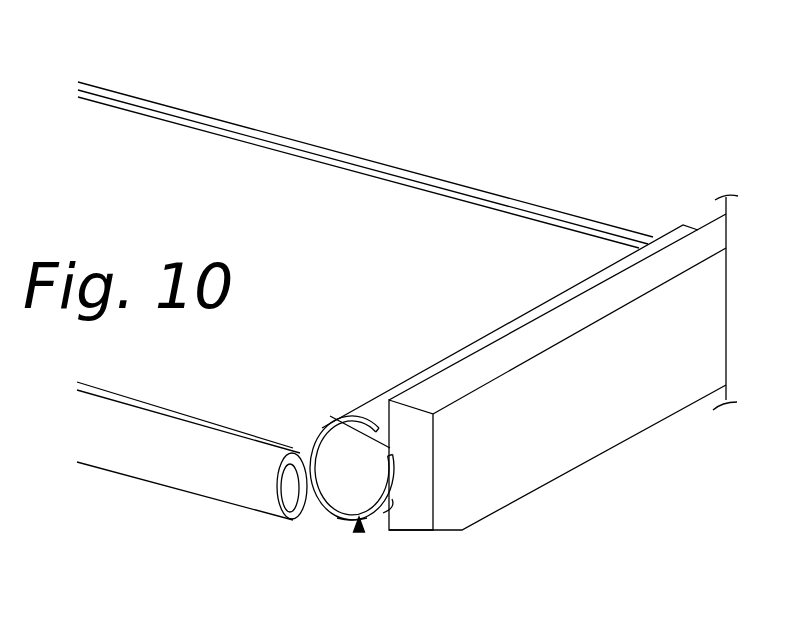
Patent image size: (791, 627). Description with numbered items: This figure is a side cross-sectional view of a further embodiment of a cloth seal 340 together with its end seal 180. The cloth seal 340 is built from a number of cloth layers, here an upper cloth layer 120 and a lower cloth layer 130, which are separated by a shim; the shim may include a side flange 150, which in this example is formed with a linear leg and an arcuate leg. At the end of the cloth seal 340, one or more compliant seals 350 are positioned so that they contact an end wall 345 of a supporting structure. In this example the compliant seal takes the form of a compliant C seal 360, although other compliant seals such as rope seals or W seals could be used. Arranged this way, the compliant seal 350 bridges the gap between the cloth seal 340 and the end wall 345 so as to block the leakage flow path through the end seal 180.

The cloth seal 340 is at (349, 110).
The upper cloth layer 120 is at (452, 217).
The end wall 345 is at (578, 452).
The lower cloth layer 130 is at (313, 507).
The compliant seal 350 is at (347, 516).
The compliant C seal 360 is at (377, 522).
The end seal 180 is at (361, 557).
The side flange 150 is at (209, 511).